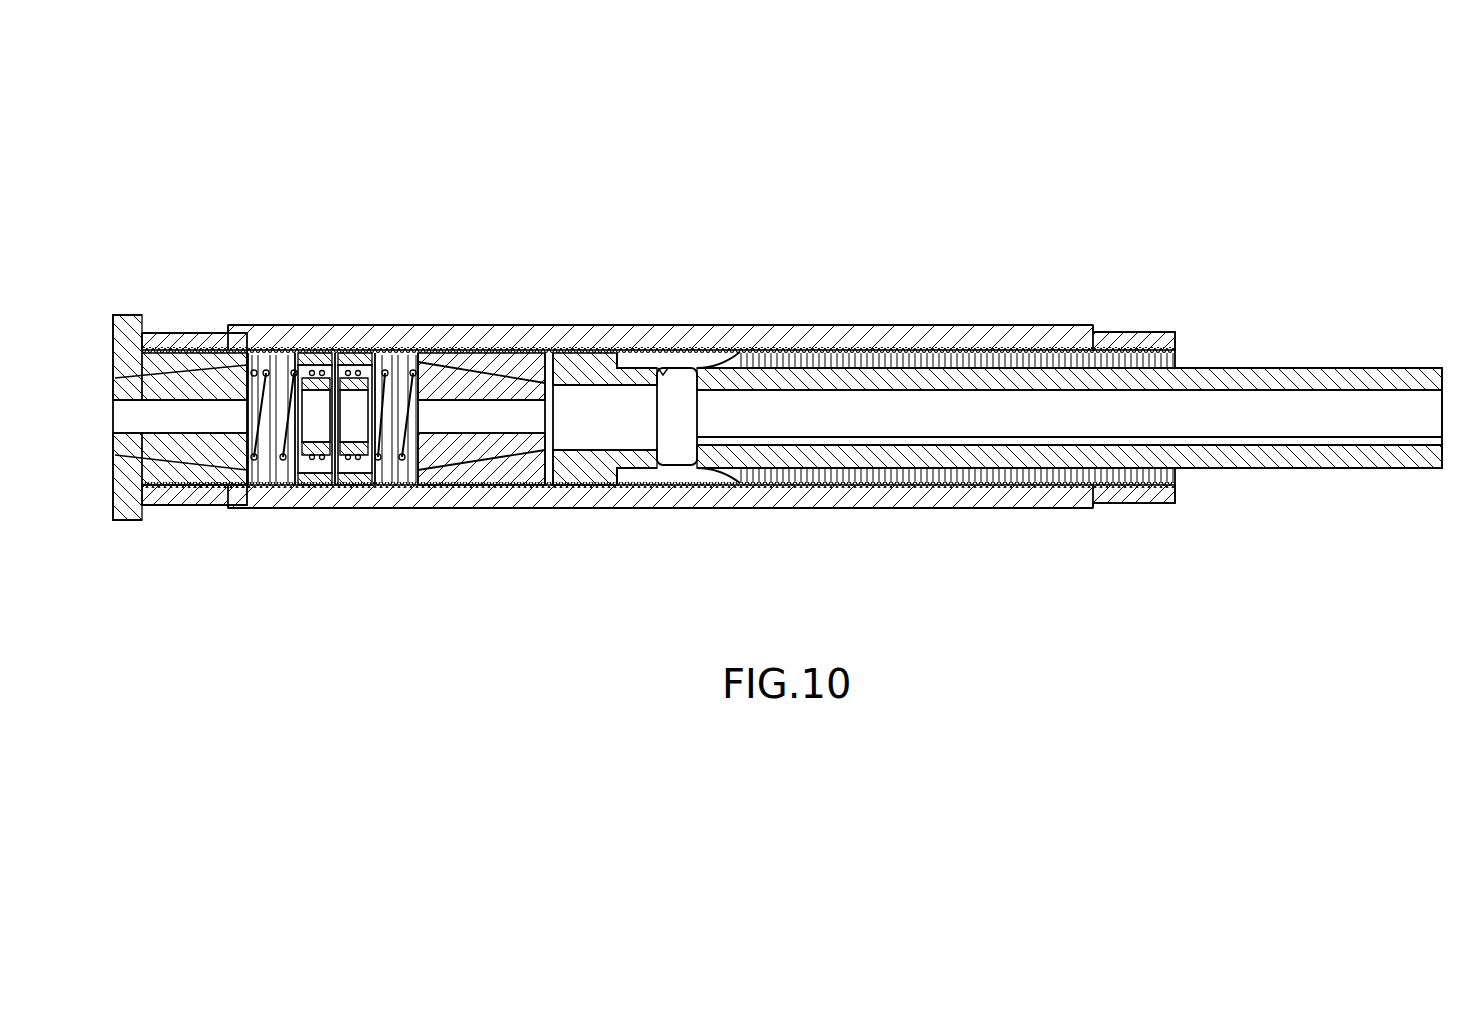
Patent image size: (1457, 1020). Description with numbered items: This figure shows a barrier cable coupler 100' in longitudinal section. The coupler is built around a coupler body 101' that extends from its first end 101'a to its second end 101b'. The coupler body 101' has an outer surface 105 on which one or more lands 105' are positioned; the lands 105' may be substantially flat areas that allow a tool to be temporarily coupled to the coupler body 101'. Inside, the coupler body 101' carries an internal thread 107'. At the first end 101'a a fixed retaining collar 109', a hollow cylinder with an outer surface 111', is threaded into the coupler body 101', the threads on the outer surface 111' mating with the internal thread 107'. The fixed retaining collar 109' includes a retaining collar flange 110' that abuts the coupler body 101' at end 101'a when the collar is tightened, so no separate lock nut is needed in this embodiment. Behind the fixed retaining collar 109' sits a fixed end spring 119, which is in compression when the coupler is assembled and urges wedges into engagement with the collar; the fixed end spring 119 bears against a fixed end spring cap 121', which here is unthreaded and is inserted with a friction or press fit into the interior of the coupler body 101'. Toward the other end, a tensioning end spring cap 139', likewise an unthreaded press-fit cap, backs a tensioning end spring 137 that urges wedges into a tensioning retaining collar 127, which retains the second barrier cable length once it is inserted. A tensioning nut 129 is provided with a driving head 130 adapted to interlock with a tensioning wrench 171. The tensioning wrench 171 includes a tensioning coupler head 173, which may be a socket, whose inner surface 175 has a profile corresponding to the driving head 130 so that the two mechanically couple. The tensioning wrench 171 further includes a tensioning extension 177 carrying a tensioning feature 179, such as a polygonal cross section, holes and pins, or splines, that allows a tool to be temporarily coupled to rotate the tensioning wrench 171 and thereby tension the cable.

The barrier cable coupler 100' is at (756, 325).
The end of coupler body 101'a is at (186, 399).
The second end of body 101b' is at (1069, 399).
The coupler body 101' is at (660, 399).
The outer surface 105 is at (660, 463).
The lands 105' is at (658, 399).
The piston 107' is at (331, 477).
The fixed retaining collar 109' is at (180, 467).
The retaining collar flange 110' is at (134, 458).
The threaded portion 111' is at (246, 541).
The fixed end spring 119 is at (265, 372).
The fixed end spring cap 121' is at (370, 483).
The tensioning retaining collar 127 is at (492, 365).
The tensioning nut 129 is at (577, 363).
The driving head 130 is at (641, 376).
The tensioning end spring 137 is at (408, 372).
The tensioning end spring cap 139' is at (425, 483).
The tensioning wrench 171 is at (1272, 455).
The tensioning coupler head 173 is at (718, 350).
The inner surface 175 is at (670, 375).
The tensioning extension 177 is at (1262, 375).
The tensioning feature 179 is at (1418, 372).